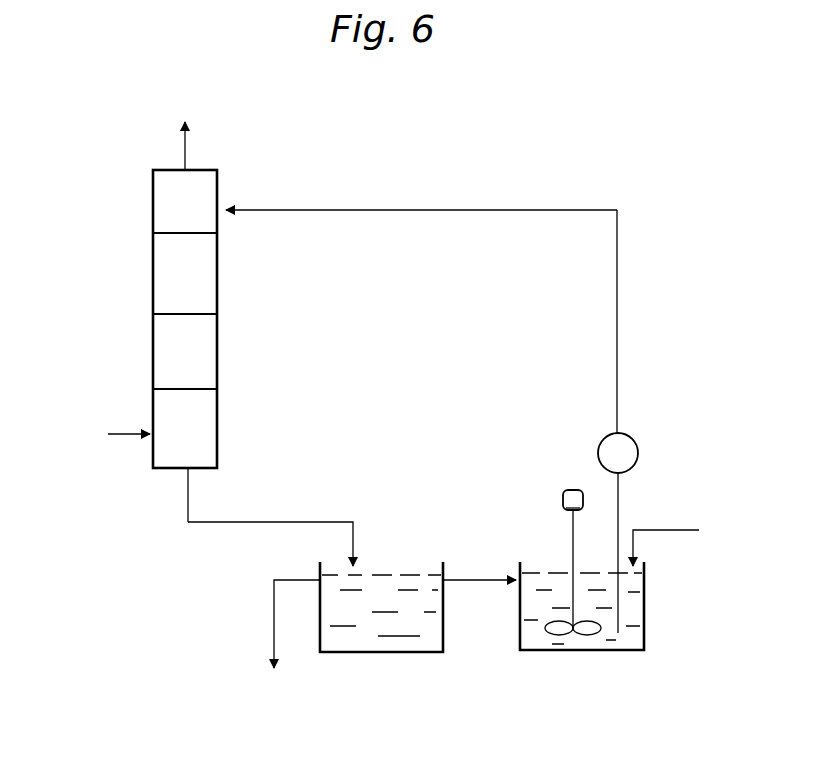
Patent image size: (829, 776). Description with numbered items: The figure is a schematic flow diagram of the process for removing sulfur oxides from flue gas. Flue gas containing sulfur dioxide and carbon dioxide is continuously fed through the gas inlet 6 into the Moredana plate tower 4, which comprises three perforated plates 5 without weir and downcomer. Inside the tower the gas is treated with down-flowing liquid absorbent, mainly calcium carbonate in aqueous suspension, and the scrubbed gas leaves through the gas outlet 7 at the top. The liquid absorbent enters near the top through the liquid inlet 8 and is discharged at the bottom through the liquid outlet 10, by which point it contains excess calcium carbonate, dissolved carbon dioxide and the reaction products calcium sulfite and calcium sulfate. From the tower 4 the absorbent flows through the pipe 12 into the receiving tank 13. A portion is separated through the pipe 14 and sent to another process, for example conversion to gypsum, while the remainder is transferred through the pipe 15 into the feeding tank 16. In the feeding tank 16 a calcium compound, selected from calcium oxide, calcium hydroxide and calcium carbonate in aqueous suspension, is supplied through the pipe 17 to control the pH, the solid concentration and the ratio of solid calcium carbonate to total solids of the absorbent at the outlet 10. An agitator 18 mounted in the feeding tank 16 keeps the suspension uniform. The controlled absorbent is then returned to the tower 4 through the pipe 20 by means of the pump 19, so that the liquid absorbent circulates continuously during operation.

The Moredana plate tower 4 is at (218, 283).
The perforated plate 5 is at (203, 233).
The gas inlet 6 is at (141, 432).
The gas outlet 7 is at (186, 153).
The liquid inlet 8 is at (239, 210).
The liquid outlet 10 is at (187, 492).
The pipe 12 is at (261, 521).
The receiving tank 13 is at (445, 619).
The pipe 14 is at (291, 579).
The pipe 15 is at (476, 579).
The feeding tank 16 is at (645, 606).
The pipe 17 is at (674, 530).
The agitator 18 is at (563, 497).
The pump 19 is at (631, 441).
The pipe 20 is at (452, 208).